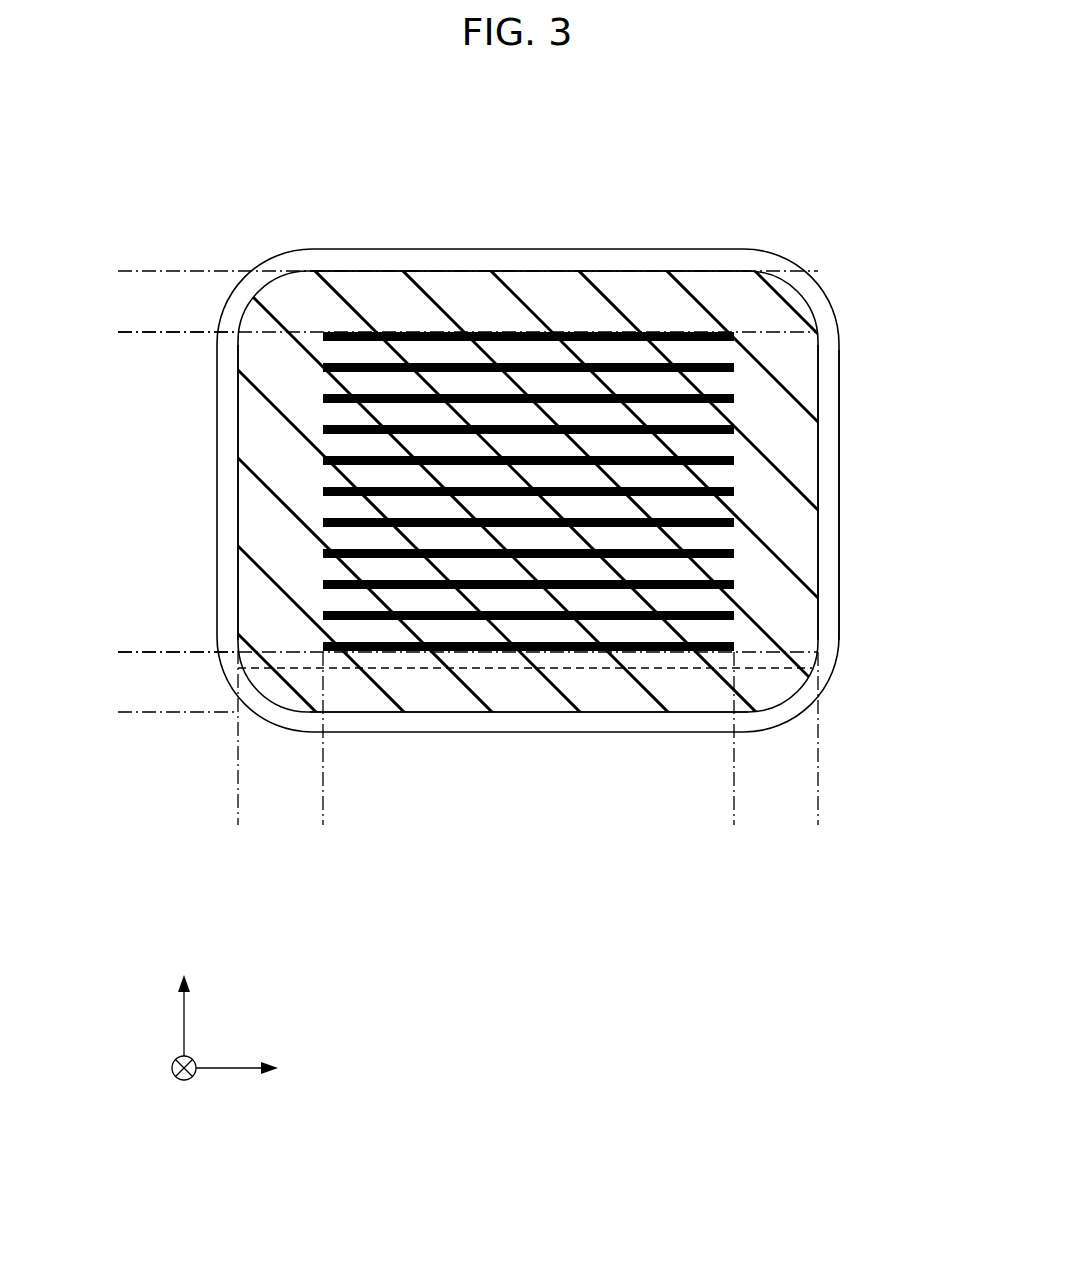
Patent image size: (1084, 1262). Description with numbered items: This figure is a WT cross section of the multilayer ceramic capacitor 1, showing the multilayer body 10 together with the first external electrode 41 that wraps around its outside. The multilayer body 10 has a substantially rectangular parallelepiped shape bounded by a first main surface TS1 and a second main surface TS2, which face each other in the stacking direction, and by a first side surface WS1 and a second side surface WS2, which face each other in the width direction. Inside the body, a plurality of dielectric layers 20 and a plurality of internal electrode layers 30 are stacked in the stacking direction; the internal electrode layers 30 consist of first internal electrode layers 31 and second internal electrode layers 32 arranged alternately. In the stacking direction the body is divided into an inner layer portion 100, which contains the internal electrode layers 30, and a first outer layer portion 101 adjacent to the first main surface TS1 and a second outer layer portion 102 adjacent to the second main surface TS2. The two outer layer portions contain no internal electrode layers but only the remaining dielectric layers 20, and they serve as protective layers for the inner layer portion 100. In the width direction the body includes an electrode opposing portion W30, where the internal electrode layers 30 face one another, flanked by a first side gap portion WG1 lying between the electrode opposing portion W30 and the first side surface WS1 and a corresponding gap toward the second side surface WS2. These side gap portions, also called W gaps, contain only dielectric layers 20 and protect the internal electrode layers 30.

The multilayer ceramic capacitor 1 is at (786, 179).
The multilayer body 10 is at (703, 271).
The dielectric layers 20 is at (455, 690).
The internal electrode layers 30 is at (535, 172).
The first internal electrode layers 31 is at (408, 332).
The second internal electrode layers 32 is at (465, 362).
The first external electrode 41 is at (830, 543).
The inner layer portion 100 is at (110, 337).
The first outer layer portion 101 is at (110, 270).
The second outer layer portion 102 is at (110, 650).
The first main surface TS1 is at (633, 271).
The second main surface TS2 is at (382, 712).
The first side surface WS1 is at (240, 560).
The second side surface WS2 is at (818, 582).
The first side gap portion WG1 is at (323, 827).
The electrode opposing portion W30 is at (734, 827).